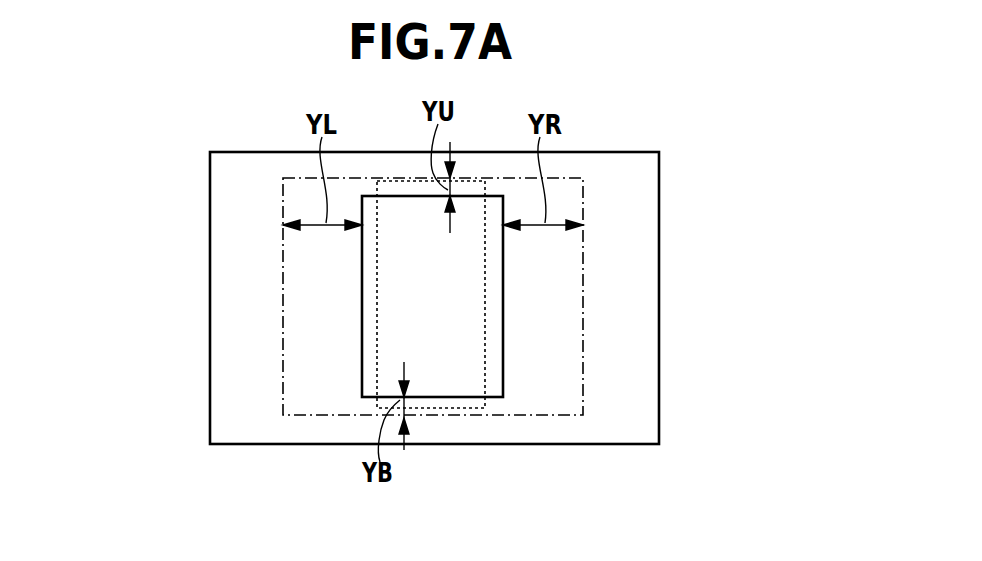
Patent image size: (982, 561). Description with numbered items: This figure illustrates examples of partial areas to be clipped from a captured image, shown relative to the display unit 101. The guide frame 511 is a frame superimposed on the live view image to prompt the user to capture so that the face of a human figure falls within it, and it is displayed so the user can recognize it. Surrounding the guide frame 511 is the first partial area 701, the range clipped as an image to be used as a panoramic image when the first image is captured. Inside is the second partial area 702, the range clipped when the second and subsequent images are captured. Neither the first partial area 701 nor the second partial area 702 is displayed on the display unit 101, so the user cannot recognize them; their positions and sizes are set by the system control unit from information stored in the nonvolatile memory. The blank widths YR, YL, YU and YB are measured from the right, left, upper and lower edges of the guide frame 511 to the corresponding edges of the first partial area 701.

The display unit 101 is at (659, 205).
The guide frame 511 is at (458, 397).
The first partial area 701 is at (583, 350).
The second partial area 702 is at (377, 350).